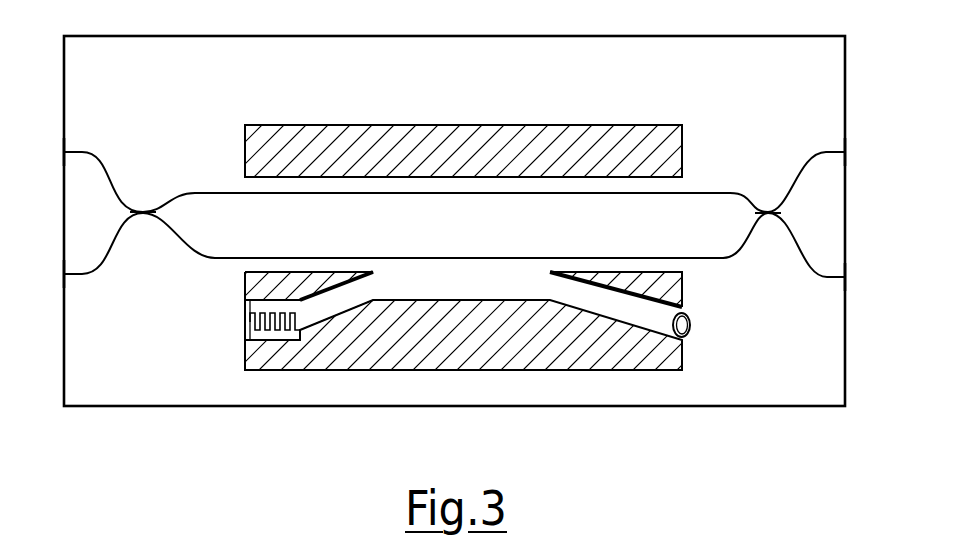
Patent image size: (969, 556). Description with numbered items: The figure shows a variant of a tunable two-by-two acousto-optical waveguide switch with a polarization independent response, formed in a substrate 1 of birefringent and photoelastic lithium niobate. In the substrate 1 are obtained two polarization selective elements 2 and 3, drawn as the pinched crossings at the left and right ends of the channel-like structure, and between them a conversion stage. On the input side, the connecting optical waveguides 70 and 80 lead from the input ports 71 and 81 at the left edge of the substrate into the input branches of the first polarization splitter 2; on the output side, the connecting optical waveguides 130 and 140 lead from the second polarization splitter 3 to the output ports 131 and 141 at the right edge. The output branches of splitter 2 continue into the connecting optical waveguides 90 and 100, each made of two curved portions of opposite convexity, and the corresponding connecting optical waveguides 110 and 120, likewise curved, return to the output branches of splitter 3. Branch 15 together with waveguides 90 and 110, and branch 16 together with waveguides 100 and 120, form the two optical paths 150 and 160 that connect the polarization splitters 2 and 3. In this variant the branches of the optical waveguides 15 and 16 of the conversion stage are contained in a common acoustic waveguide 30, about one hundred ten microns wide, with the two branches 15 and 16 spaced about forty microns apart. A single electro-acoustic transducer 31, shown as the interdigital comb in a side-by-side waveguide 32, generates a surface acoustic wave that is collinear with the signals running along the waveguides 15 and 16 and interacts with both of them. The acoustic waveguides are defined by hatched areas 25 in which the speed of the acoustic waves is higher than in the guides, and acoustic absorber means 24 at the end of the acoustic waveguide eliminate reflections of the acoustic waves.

The substrate 1 is at (683, 410).
The polarization selective element 2 is at (143, 222).
The polarization selective element 3 is at (770, 224).
The branch 15 is at (347, 193).
The branch 16 is at (465, 259).
The acoustic absorber means 24 is at (690, 333).
The area 25 is at (415, 135).
The common acoustic waveguide 30 is at (476, 182).
The electro-acoustic transducer 31 is at (248, 320).
The side-by-side waveguide 32 is at (321, 308).
The connecting optical waveguide 70 is at (78, 143).
The input port 71 is at (64, 152).
The connecting optical waveguide 80 is at (80, 284).
The input port 81 is at (64, 274).
The connecting optical waveguide 90 is at (213, 183).
The connecting optical waveguide 100 is at (215, 269).
The connecting optical waveguide 110 is at (723, 184).
The connecting optical waveguide 120 is at (725, 266).
The connecting optical waveguide 130 is at (824, 143).
The output port 131 is at (845, 152).
The connecting optical waveguide 140 is at (825, 286).
The output port 141 is at (845, 277).
The optical path 150 is at (304, 184).
The optical path 160 is at (437, 262).